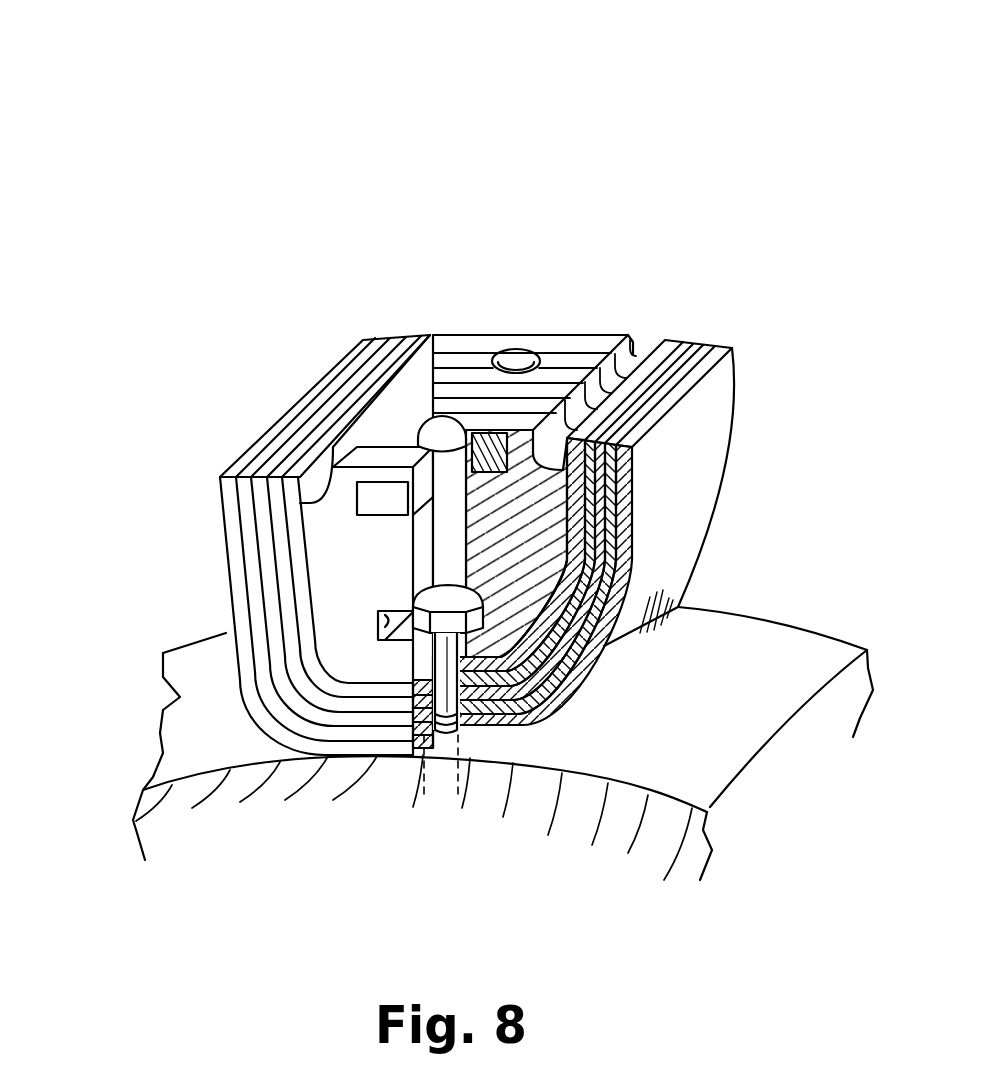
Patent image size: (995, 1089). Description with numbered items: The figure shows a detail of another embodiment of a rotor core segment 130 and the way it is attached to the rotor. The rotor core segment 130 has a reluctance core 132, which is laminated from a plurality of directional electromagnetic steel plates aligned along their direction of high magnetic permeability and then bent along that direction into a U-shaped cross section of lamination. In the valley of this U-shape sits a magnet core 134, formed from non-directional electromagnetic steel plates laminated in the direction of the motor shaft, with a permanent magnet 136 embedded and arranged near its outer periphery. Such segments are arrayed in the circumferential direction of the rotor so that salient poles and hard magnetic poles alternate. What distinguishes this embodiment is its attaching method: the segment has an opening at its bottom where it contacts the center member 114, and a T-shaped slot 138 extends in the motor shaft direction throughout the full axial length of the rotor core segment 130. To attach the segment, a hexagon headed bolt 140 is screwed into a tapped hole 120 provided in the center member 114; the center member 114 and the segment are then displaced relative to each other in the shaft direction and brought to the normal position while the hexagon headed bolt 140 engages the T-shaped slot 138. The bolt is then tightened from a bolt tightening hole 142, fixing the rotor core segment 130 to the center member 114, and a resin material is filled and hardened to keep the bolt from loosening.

The center member 114 is at (727, 762).
The tapped hole 120 is at (422, 800).
The rotor core segment 130 is at (201, 118).
The reluctance core 132 is at (695, 478).
The magnet core 134 is at (587, 345).
The permanent magnet 136 is at (372, 495).
The T-shaped slot 138 is at (378, 633).
The hexagon headed bolt 140 is at (440, 658).
The bolt tightening hole 142 is at (440, 443).